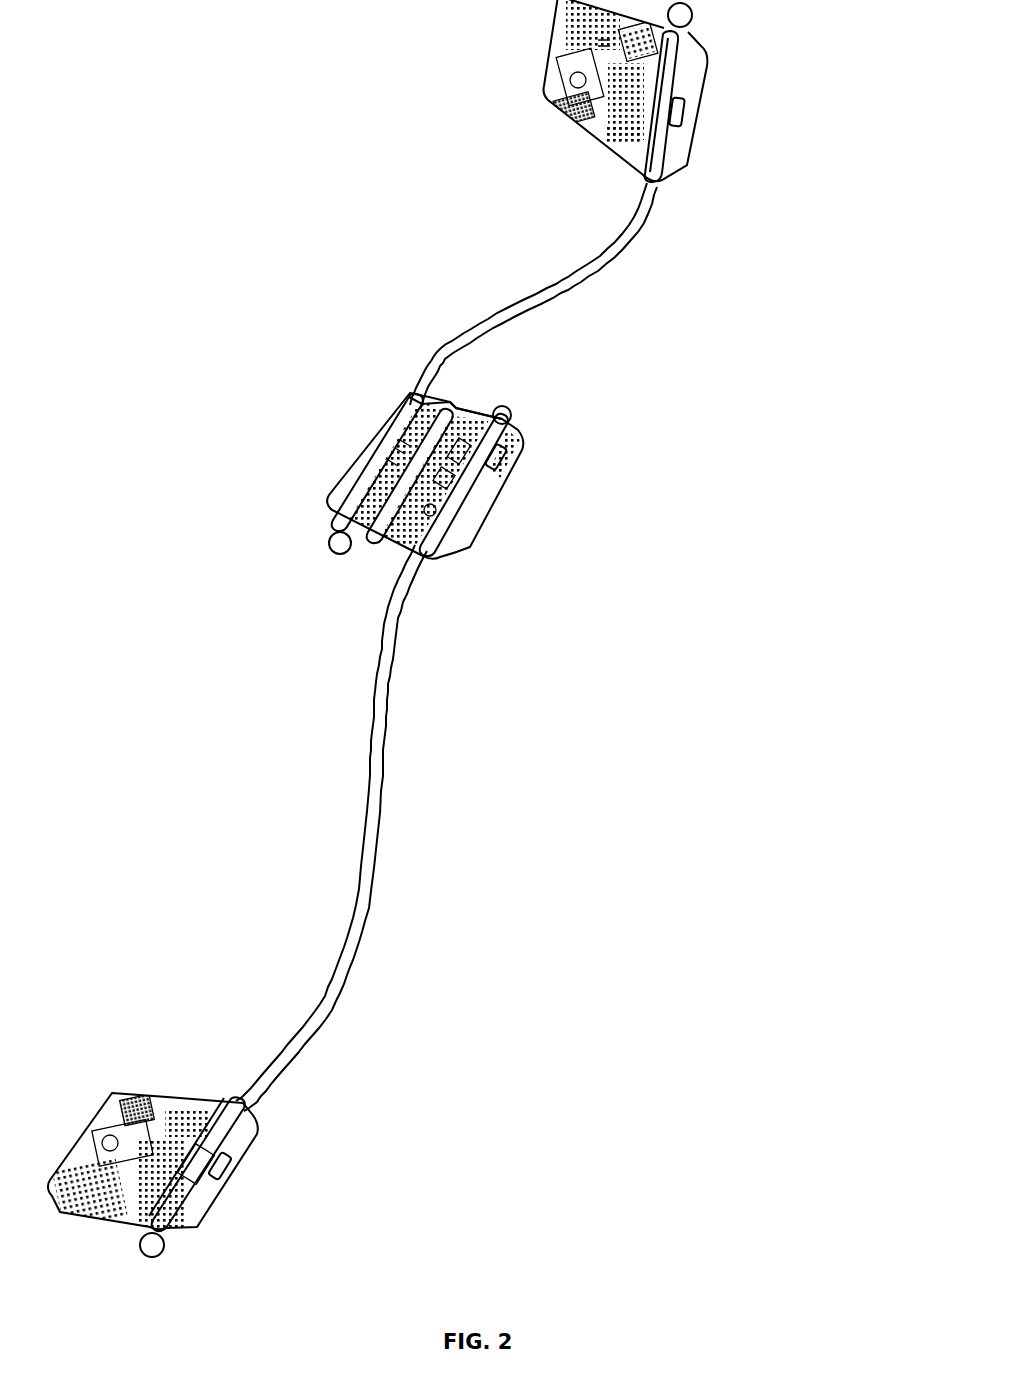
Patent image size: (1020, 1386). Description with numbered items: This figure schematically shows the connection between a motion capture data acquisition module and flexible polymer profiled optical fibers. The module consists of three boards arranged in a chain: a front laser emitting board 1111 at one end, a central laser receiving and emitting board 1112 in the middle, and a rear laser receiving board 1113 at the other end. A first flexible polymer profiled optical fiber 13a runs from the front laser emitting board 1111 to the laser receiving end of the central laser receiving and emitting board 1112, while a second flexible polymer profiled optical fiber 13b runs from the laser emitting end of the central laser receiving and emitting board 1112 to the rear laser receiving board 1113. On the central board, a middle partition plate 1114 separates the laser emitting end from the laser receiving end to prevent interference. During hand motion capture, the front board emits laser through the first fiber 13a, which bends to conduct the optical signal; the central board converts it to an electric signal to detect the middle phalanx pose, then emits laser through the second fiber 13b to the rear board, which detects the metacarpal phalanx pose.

The front laser emitting board 1111 is at (697, 65).
The central laser receiving and emitting board 1112 is at (486, 504).
The rear laser receiving board 1113 is at (203, 1202).
The middle partition plate 1114 is at (453, 406).
The first flexible polymer profiled optical fiber 13a is at (552, 290).
The second flexible polymer profiled optical fiber 13b is at (383, 785).